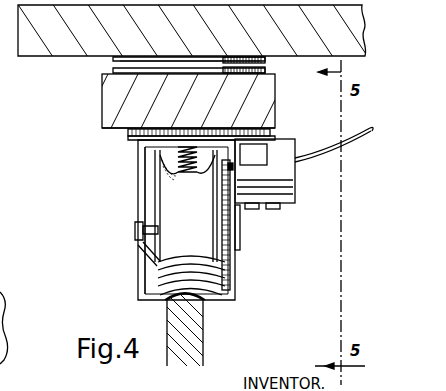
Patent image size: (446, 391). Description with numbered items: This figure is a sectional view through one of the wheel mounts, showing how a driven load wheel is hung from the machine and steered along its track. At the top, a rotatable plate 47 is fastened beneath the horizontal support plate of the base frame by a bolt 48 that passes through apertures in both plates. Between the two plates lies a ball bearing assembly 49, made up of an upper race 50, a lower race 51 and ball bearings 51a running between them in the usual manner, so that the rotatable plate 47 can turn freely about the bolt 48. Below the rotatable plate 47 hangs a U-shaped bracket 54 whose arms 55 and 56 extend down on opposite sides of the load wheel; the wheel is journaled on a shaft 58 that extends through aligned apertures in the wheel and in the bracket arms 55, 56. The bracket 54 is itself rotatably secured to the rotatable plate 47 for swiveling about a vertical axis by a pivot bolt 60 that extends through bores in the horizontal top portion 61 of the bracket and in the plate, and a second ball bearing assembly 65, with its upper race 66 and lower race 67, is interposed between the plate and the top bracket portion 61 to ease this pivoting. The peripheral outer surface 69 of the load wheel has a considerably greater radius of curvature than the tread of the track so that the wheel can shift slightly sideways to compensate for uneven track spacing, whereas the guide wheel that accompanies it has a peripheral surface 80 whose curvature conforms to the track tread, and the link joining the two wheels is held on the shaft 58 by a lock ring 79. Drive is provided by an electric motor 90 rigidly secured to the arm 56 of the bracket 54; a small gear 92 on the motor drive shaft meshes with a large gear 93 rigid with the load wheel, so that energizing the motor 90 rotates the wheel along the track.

The rotatable plate 47 is at (116, 117).
The bolt 48 is at (188, 62).
The ball bearing assembly 49 is at (108, 63).
The upper race 50 is at (266, 61).
The lower race 51 is at (112, 77).
The ball bearings 51a is at (312, 82).
The U-shaped bracket 54 is at (138, 180).
The bracket arm 55 is at (144, 198).
The bracket arm 56 is at (240, 240).
The shaft 58 is at (150, 230).
The pivot bolt 60 is at (178, 152).
The horizontal top portion 61 is at (213, 148).
The ball bearing assembly 65 is at (130, 138).
The upper race 66 is at (266, 134).
The lower race 67 is at (290, 144).
The peripheral outer surface 69 is at (170, 252).
The lock ring 79 is at (135, 230).
The peripheral surface 80 is at (203, 304).
The electric motor 90 is at (296, 189).
The small gear 92 is at (234, 168).
The large gear 93 is at (233, 284).